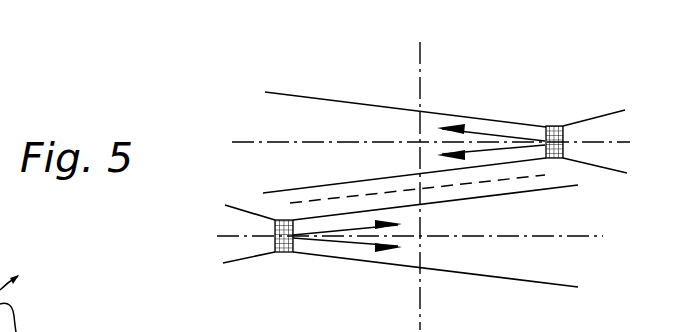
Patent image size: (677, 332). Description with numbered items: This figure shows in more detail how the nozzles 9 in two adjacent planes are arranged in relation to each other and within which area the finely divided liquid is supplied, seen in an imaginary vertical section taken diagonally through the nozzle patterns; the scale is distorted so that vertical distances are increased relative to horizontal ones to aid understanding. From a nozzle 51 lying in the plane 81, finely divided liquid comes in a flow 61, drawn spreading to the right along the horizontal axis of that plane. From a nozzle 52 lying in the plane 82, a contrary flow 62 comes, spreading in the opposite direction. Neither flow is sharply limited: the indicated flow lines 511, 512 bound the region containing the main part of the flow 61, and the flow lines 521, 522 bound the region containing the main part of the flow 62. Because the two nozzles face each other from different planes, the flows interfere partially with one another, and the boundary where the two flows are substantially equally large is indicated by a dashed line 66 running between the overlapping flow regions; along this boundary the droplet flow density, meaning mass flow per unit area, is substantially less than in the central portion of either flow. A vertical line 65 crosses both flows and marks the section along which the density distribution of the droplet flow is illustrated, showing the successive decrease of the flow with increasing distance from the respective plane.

The nozzle 9 is at (15, 292).
The nozzle 51 is at (285, 252).
The nozzle 52 is at (555, 126).
The flow 61 is at (448, 248).
The contrary flow 62 is at (382, 121).
The section line 65 is at (421, 76).
The boundary line 66 is at (477, 182).
The plane 81 is at (583, 235).
The plane 82 is at (240, 142).
The flow line 511 is at (525, 280).
The flow line 512 is at (547, 191).
The flow line 521 is at (307, 185).
The flow line 522 is at (322, 100).